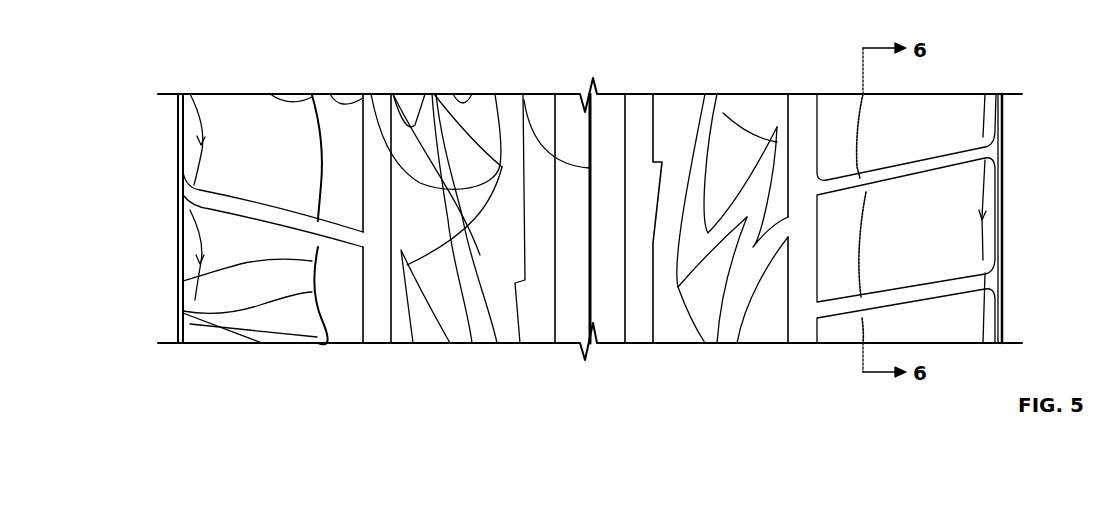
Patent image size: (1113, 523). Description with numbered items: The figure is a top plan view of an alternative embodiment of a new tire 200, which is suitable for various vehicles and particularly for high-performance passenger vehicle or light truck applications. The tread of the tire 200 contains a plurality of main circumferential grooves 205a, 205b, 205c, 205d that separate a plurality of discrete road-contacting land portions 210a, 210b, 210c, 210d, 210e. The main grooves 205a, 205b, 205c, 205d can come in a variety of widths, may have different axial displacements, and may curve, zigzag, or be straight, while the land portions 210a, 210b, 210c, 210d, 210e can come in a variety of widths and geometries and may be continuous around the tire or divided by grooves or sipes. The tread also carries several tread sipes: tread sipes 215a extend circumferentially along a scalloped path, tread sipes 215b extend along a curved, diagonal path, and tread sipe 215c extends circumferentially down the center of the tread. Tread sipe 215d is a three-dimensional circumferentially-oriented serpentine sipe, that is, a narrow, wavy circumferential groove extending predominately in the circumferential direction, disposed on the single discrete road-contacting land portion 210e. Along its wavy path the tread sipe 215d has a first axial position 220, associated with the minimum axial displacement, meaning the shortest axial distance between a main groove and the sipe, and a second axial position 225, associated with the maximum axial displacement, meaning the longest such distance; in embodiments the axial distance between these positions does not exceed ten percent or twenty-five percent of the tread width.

The tire 200 is at (136, 66).
The main circumferential groove 205a is at (379, 352).
The main circumferential groove 205b is at (542, 352).
The main circumferential groove 205c is at (646, 352).
The main circumferential groove 205d is at (805, 352).
The discrete road-contacting land portion 210a is at (306, 82).
The discrete road-contacting land portion 210b is at (460, 82).
The discrete road-contacting land portion 210c is at (570, 82).
The discrete road-contacting land portion 210d is at (710, 82).
The discrete road-contacting land portion 210e is at (965, 82).
The tread sipe 215a is at (187, 110).
The tread sipe 215b is at (371, 94).
The tread sipe 215c is at (523, 94).
The three-dimensional circumferentially-oriented serpentine sipe 215d is at (192, 224).
The first axial position 220 is at (182, 320).
The second axial position 225 is at (183, 281).